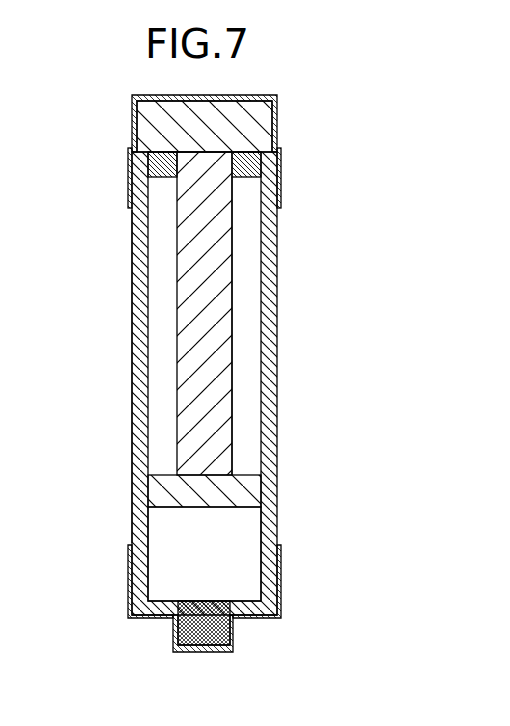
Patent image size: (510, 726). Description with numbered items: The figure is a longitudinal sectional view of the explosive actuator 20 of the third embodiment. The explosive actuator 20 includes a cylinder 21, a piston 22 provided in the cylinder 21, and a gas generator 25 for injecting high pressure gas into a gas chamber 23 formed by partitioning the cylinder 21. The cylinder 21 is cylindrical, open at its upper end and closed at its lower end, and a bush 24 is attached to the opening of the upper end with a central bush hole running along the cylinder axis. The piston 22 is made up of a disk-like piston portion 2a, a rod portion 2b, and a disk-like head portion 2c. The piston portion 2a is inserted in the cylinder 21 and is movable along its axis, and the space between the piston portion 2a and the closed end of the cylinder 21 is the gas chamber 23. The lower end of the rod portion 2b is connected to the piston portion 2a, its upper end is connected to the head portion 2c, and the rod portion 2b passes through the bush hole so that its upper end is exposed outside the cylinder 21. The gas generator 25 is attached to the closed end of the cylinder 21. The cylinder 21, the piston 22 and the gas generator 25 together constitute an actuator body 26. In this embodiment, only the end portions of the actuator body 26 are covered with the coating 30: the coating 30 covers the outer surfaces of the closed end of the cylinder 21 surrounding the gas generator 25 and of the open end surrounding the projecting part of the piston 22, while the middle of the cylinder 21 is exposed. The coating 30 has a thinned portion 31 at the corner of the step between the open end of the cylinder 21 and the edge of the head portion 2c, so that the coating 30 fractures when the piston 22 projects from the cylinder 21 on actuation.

The explosive actuator 20 is at (294, 58).
The thinned portion 31 is at (277, 146).
The head portion 2c is at (138, 124).
The bush 24 is at (150, 162).
The cylinder 21 is at (132, 244).
The actuator body 26 is at (131, 402).
The rod portion 2b is at (185, 310).
The piston 22 is at (233, 300).
The piston portion 2a is at (158, 490).
The gas chamber 23 is at (158, 552).
The coating 30 is at (281, 195).
The gas generator 25 is at (177, 631).